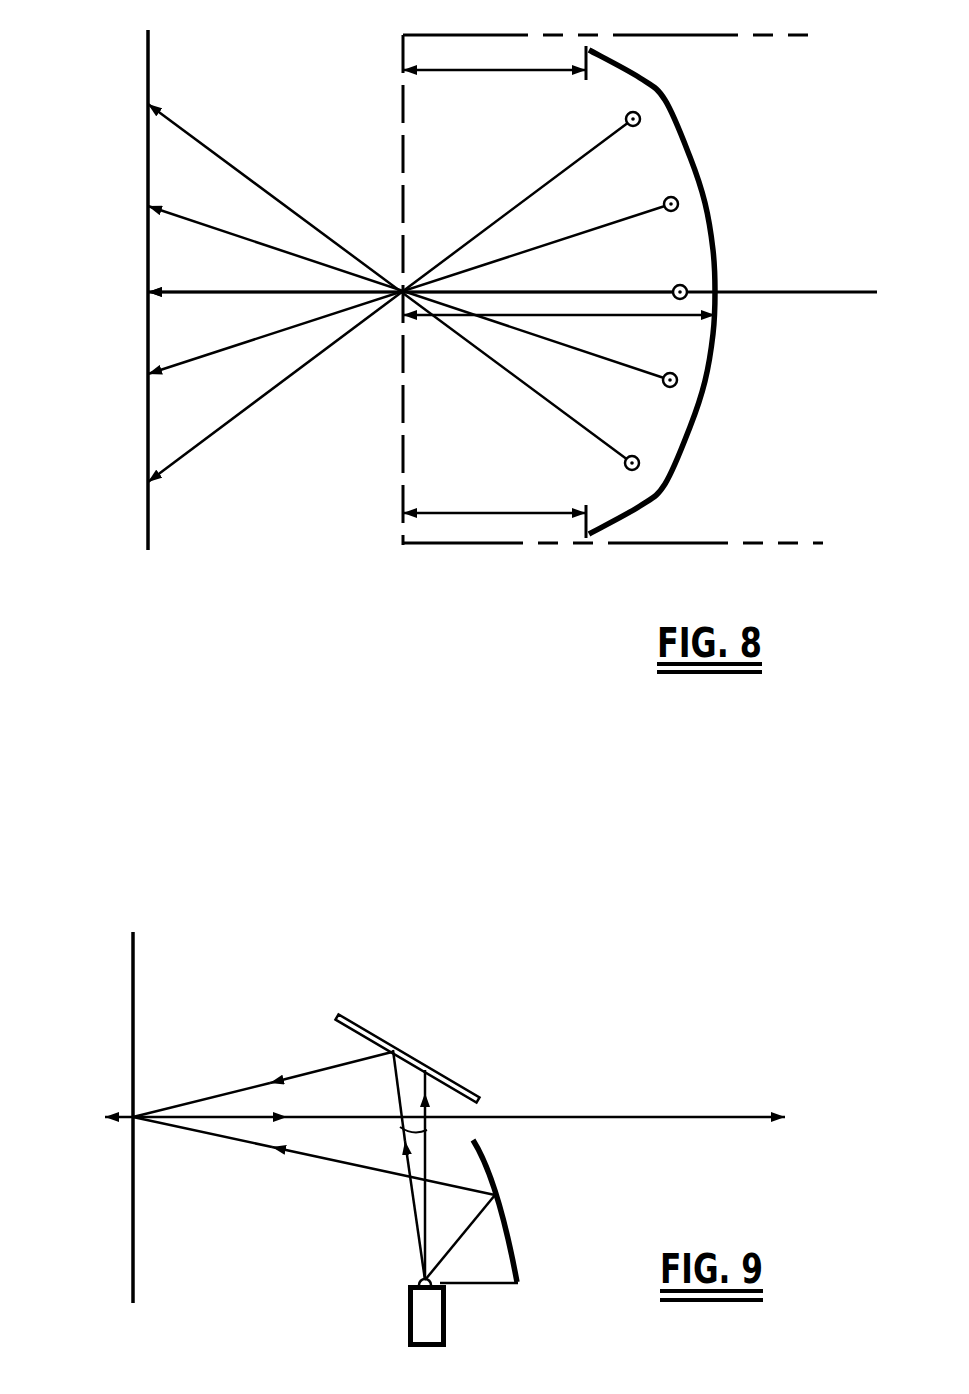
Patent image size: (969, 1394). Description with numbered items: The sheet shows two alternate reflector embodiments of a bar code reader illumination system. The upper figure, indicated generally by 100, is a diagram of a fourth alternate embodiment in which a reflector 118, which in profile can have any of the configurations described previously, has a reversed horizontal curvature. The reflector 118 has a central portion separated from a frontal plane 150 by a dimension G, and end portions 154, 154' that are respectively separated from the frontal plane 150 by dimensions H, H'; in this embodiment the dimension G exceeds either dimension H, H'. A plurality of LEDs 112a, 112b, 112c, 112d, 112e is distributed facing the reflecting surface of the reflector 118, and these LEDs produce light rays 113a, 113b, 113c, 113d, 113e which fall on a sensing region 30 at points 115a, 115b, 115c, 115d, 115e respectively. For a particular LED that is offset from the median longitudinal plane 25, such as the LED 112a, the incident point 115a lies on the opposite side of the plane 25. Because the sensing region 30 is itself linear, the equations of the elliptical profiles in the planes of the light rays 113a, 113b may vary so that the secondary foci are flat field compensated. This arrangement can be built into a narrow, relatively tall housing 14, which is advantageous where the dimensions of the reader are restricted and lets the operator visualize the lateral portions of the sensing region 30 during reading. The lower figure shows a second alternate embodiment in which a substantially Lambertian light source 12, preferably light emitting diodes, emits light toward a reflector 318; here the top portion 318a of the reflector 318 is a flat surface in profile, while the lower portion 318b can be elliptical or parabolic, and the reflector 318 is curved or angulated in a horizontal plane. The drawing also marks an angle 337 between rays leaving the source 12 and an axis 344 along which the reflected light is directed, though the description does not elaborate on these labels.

In FIG. 8, the projection display system 100 is at (281, 80).
In FIG. 8, the sensing region 30 is at (136, 514).
In FIG. 8, the frontal plane 150 is at (400, 125).
In FIG. 8, the housing 14 is at (785, 37).
In FIG. 8, the median longitudinal plane 25 is at (826, 298).
In FIG. 8, the reflector 118 is at (690, 158).
In FIG. 8, the end portion 154 is at (638, 543).
In FIG. 8, the end portion 154' is at (650, 61).
In FIG. 8, the dimension H is at (494, 487).
In FIG. 8, the dimension H' is at (494, 90).
In FIG. 8, the dimension G is at (587, 318).
In FIG. 8, the LED 112a is at (641, 115).
In FIG. 8, the LED 112b is at (679, 202).
In FIG. 8, the LED 112c is at (688, 290).
In FIG. 8, the LED 112d is at (678, 380).
In FIG. 8, the LED 112e is at (639, 470).
In FIG. 8, the light ray 113a is at (280, 383).
In FIG. 8, the light ray 113b is at (270, 337).
In FIG. 8, the light ray 113c is at (270, 294).
In FIG. 8, the light ray 113d is at (265, 244).
In FIG. 8, the light ray 113e is at (270, 194).
In FIG. 8, the incident point 115a is at (146, 482).
In FIG. 8, the incident point 115b is at (146, 372).
In FIG. 8, the incident point 115c is at (146, 292).
In FIG. 8, the incident point 115d is at (146, 205).
In FIG. 8, the incident point 115e is at (146, 100).
In FIG. 9, the reflector 318 is at (539, 1058).
In FIG. 9, the top portion 318a is at (400, 1050).
In FIG. 9, the lower portion 318b is at (512, 1217).
In FIG. 9, the angle 337 is at (400, 1127).
In FIG. 9, the optical axis 344 is at (473, 1127).
In FIG. 9, the light source 12 is at (447, 1322).